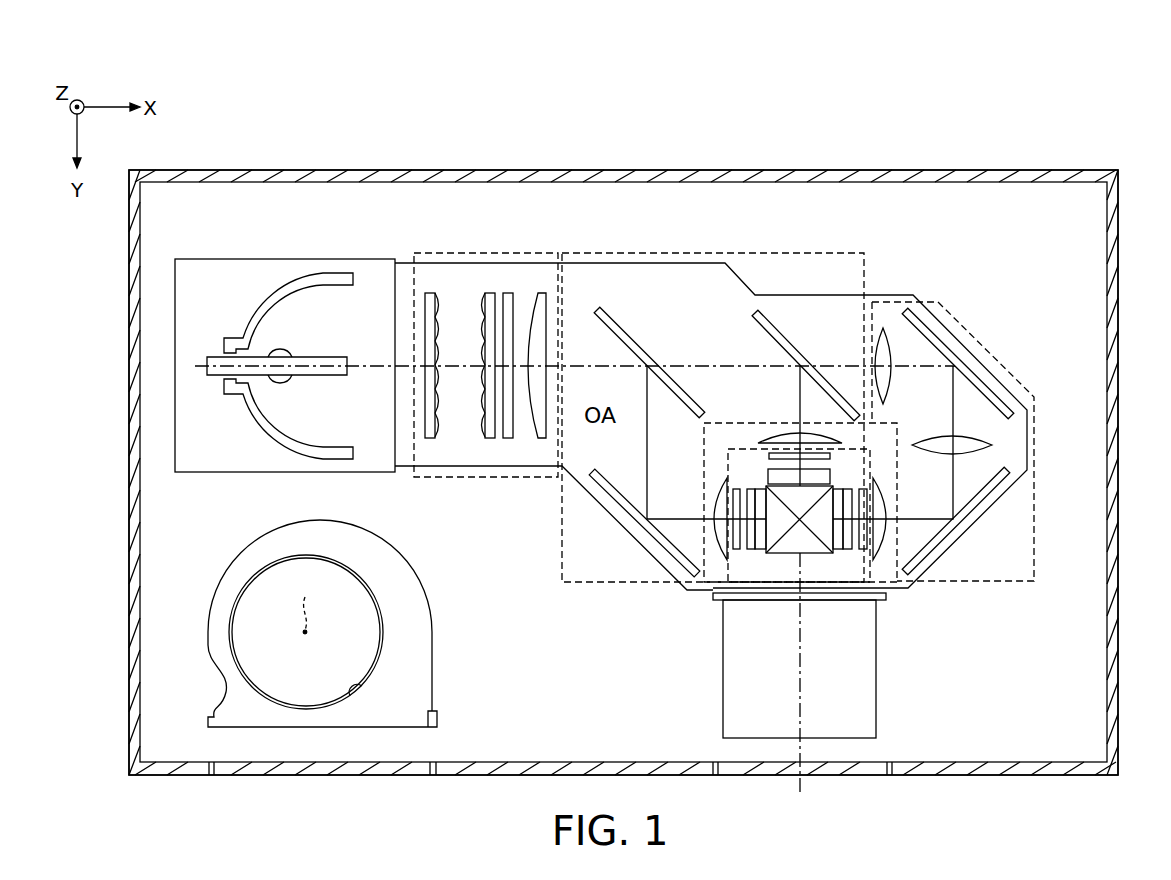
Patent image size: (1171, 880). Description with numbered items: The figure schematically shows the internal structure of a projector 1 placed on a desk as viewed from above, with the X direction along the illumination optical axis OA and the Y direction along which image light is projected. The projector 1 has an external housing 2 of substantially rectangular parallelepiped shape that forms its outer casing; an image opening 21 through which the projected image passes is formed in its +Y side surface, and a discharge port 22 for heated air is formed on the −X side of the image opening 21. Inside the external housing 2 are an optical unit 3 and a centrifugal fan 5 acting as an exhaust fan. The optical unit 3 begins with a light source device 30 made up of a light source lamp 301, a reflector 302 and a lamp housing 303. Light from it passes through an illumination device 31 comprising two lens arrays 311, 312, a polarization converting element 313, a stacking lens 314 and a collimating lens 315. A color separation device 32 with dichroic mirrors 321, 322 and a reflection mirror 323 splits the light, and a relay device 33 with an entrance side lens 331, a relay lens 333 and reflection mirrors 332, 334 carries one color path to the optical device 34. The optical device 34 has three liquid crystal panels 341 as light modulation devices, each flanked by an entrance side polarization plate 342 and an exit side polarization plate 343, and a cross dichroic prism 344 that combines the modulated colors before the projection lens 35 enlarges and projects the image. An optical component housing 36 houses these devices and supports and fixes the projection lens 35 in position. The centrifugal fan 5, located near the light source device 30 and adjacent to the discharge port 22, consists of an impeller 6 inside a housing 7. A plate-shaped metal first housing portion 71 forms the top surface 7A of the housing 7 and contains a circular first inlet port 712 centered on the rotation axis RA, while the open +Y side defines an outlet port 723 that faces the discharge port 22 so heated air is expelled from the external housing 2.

The projector 1 is at (968, 150).
The external housing 2 is at (1118, 549).
The image opening 21 is at (722, 776).
The discharge port 22 is at (432, 776).
The optical unit 3 is at (956, 280).
The light source device 30 is at (263, 258).
The light source lamp 301 is at (303, 377).
The reflector 302 is at (262, 415).
The lamp housing 303 is at (208, 473).
The illumination device 31 is at (483, 252).
The lens array 311 is at (432, 440).
The lens array 312 is at (490, 440).
The polarization converting element 313 is at (508, 440).
The stacking lens 314 is at (540, 440).
The collimating lens 315 is at (717, 505).
The color separation device 32 is at (679, 252).
The dichroic mirror 321 is at (618, 336).
The dichroic mirror 322 is at (772, 336).
The reflection mirror 323 is at (614, 490).
The relay device 33 is at (1035, 440).
The entrance side lens 331 is at (885, 340).
The reflection mirror 332 is at (1000, 398).
The relay lens 333 is at (940, 443).
The reflection mirror 334 is at (970, 505).
The optical device 34 is at (745, 440).
The liquid crystal panel 341 is at (790, 478).
The entrance side polarization plate 342 is at (778, 456).
The exit side polarization plate 343 is at (760, 482).
The cross dichroic prism 344 is at (810, 548).
The projection lens 35 is at (870, 697).
The optical component housing 36 is at (593, 498).
The centrifugal fan 5 is at (424, 576).
The impeller 6 is at (282, 617).
The housing 7 is at (432, 598).
The top surface 7A is at (425, 627).
The first housing portion 71 is at (425, 652).
The first inlet port 712 is at (352, 688).
The outlet port 723 is at (398, 728).